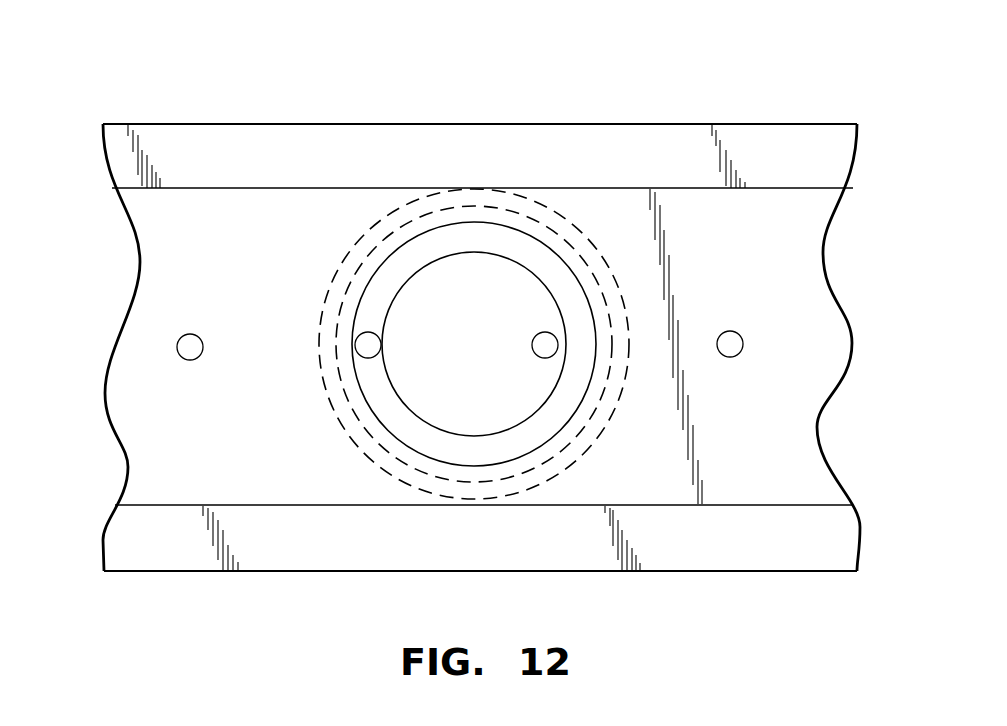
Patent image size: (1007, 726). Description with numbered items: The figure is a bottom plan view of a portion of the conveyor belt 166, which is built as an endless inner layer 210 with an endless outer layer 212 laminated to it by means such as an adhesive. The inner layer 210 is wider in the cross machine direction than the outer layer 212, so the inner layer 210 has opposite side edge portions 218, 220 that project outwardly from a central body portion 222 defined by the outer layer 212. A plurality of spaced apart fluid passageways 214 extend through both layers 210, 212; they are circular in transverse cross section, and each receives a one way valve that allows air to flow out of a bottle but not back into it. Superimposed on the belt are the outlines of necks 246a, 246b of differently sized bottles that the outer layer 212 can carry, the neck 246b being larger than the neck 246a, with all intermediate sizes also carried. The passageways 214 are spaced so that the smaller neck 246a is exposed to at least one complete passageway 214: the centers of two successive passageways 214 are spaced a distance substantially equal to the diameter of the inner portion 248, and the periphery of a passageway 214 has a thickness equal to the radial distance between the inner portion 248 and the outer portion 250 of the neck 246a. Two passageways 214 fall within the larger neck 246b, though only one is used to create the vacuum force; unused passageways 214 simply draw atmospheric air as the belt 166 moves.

The conveyor belt 166 is at (197, 104).
The endless inner layer 210 is at (103, 537).
The endless outer layer 212 is at (103, 368).
The fluid passageways 214 is at (192, 346).
The side edge portion 218 is at (524, 167).
The side edge portion 220 is at (549, 549).
The central body portion 222 is at (284, 244).
The neck 246a is at (517, 248).
The neck 246b is at (437, 214).
The inner portion 248 is at (418, 420).
The outer portion 250 is at (392, 435).